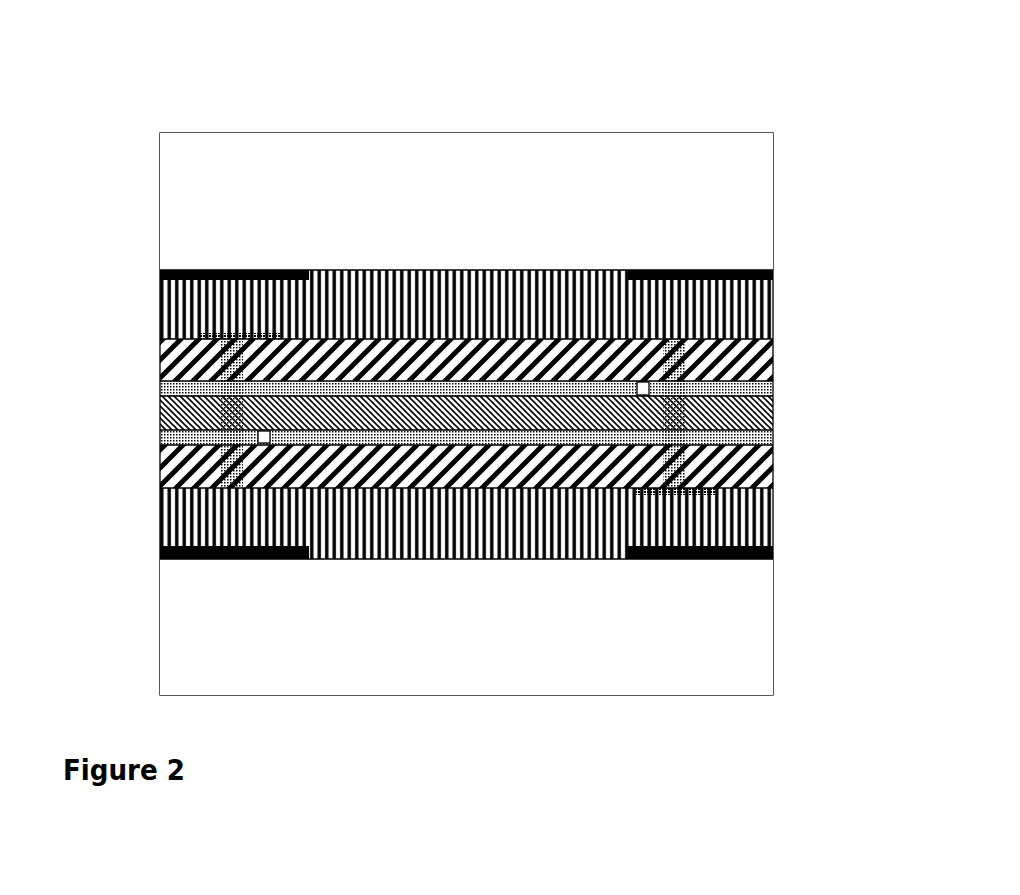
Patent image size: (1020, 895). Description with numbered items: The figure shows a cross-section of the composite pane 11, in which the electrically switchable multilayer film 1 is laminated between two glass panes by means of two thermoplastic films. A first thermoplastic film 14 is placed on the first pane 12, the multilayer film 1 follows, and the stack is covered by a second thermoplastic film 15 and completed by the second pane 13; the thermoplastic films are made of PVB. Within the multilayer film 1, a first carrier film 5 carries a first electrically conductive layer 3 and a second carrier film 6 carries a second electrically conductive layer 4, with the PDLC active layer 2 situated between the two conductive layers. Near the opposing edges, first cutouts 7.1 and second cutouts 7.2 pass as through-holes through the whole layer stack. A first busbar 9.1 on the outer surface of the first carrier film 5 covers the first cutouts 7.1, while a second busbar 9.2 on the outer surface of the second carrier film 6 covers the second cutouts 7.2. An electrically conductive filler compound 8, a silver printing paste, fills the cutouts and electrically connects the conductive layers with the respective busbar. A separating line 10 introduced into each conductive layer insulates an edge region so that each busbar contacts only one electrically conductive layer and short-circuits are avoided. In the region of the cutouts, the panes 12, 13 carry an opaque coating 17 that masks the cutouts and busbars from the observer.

The multilayer film 1 is at (533, 413).
The active layer 2 is at (750, 403).
The first electrically conductive layer 3 is at (748, 429).
The second electrically conductive layer 4 is at (745, 380).
The first carrier film 5 is at (747, 473).
The second carrier film 6 is at (738, 357).
The first cutouts 7.1 is at (713, 333).
The second cutouts 7.2 is at (190, 370).
The electrically conductive filler compound 8 is at (466, 410).
The first busbar 9.1 is at (682, 482).
The second busbar 9.2 is at (186, 326).
The separating line 10 is at (250, 428).
The composite pane 11 is at (556, 108).
The first pane 12 is at (210, 608).
The second pane 13 is at (233, 161).
The first thermoplastic film 14 is at (205, 519).
The second thermoplastic film 15 is at (175, 285).
The opaque coating 17 is at (152, 263).